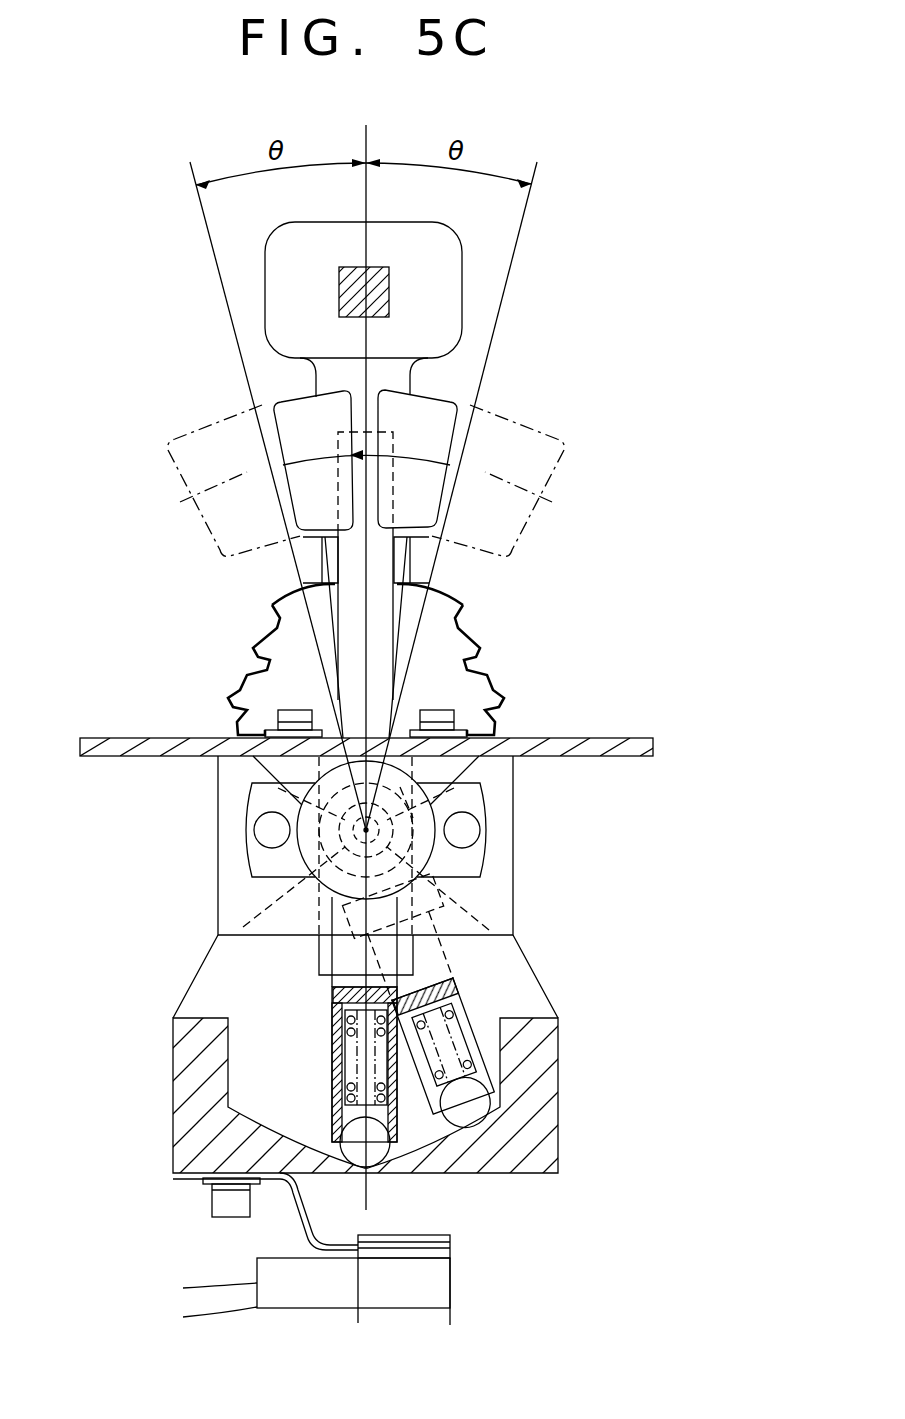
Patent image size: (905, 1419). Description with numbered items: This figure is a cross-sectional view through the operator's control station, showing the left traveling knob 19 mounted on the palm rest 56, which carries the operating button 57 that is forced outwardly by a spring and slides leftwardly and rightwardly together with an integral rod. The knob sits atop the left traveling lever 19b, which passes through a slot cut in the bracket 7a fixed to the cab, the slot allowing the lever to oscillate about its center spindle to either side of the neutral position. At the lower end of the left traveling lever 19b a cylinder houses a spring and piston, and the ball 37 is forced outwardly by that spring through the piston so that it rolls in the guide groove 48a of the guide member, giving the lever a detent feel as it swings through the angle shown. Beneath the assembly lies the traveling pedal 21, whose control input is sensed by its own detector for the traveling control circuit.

The operating button 57 is at (389, 292).
The palm rest 56 is at (462, 330).
The left traveling knob 19 is at (467, 438).
The left traveling lever 19b is at (383, 640).
The bracket 7a is at (580, 740).
The guide groove 48a is at (255, 1115).
The ball 37 is at (380, 1153).
The traveling pedal 21 is at (452, 1275).